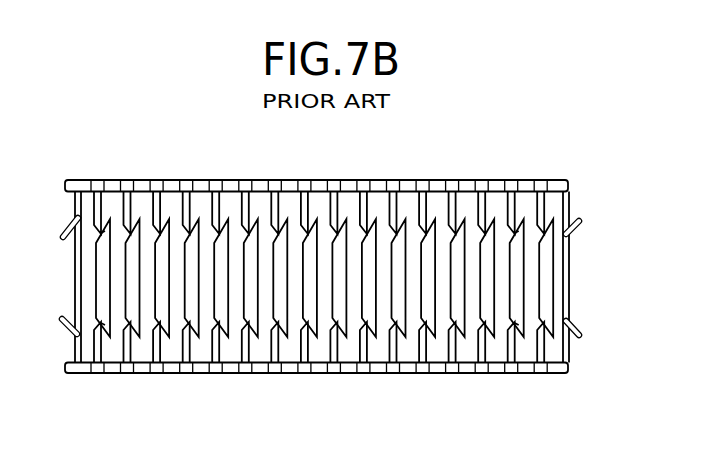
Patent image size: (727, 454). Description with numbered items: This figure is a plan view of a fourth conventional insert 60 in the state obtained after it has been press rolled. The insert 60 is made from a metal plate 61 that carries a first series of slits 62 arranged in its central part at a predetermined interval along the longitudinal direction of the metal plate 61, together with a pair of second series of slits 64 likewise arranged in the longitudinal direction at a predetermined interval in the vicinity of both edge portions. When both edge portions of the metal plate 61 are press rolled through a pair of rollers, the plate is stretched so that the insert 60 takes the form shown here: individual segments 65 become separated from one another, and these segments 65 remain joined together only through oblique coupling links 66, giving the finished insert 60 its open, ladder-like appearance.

The insert 60 is at (414, 148).
The metal plate 61 is at (567, 184).
The first series of slits 62 is at (100, 280).
The second series of slits 64 is at (97, 200).
The segments 65 is at (113, 200).
The oblique coupling links 66 is at (76, 224).